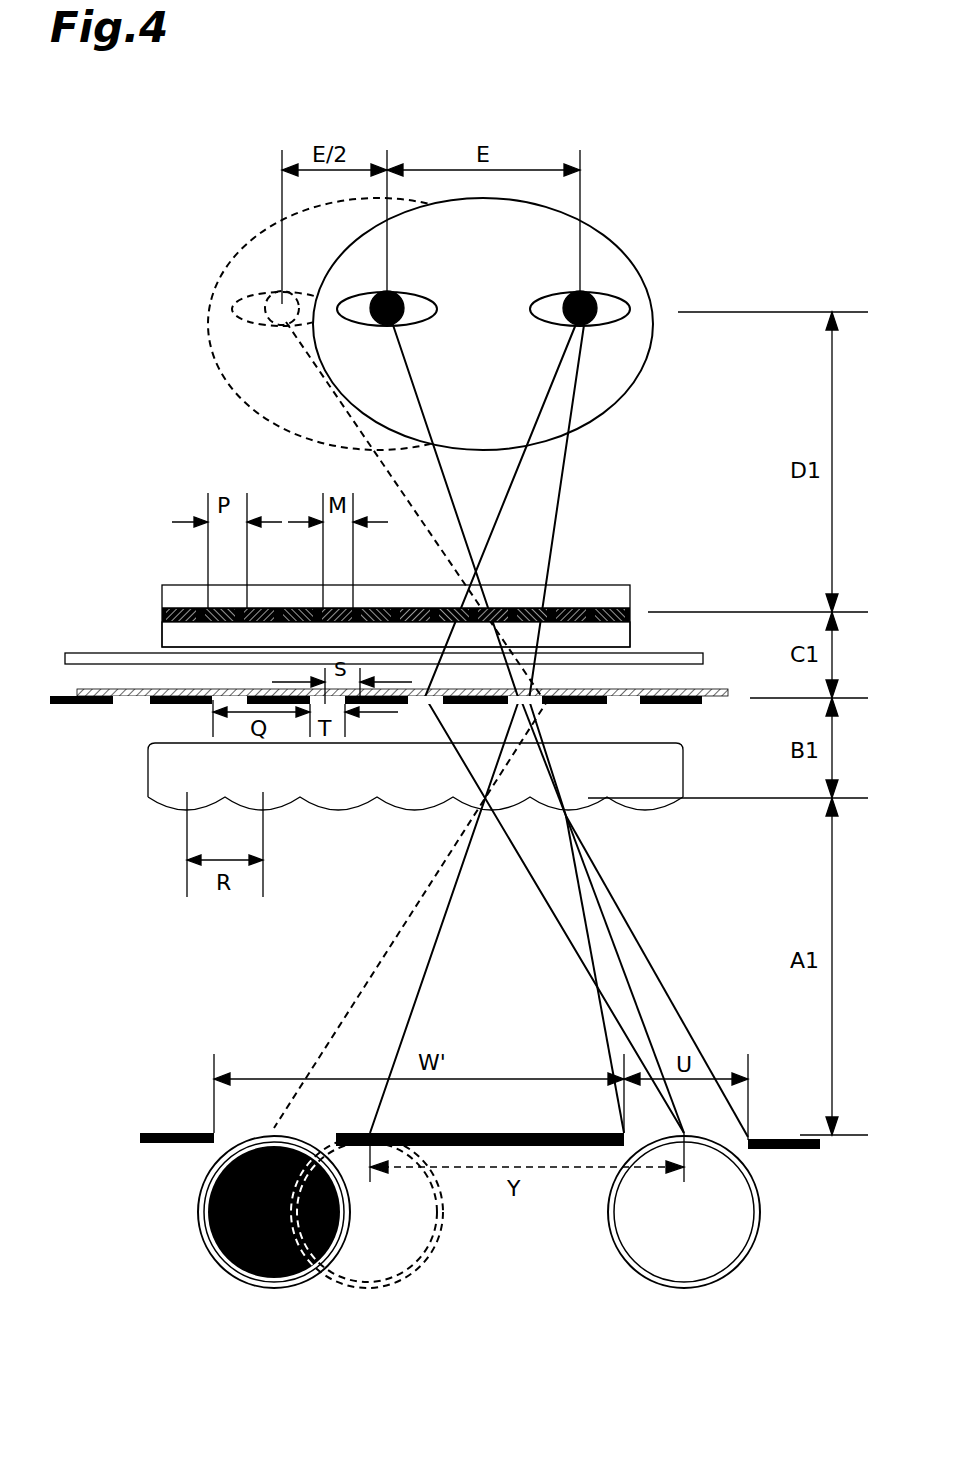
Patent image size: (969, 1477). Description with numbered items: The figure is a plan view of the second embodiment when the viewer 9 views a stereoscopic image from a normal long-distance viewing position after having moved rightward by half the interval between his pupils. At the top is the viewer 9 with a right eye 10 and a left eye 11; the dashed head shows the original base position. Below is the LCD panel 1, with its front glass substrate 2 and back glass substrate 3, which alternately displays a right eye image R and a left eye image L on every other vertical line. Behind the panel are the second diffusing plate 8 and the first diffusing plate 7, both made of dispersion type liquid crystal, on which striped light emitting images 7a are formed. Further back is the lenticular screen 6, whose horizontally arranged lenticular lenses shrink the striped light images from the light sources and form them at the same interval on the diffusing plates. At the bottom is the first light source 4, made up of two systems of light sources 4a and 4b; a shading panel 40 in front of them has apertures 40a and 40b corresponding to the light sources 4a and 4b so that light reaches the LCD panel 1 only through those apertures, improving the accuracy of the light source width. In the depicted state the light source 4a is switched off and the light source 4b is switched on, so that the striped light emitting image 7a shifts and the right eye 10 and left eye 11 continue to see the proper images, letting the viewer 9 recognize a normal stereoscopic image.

The LCD panel 1 is at (387, 587).
The front glass substrate 2 is at (632, 596).
The back glass substrate 3 is at (632, 638).
The first light source 4 is at (435, 1231).
The light source 4a is at (285, 1287).
The light source 4b is at (710, 1287).
The lenticular screen 6 is at (685, 780).
The first diffusing plate 7 is at (385, 701).
The striped light emitting image 7a is at (222, 696).
The second diffusing plate 8 is at (90, 656).
The viewer 9 is at (640, 282).
The right eye 10 is at (397, 294).
The left eye 11 is at (590, 294).
The shading panel 40 is at (528, 1132).
The aperture 40a is at (302, 1131).
The aperture 40b is at (729, 1138).